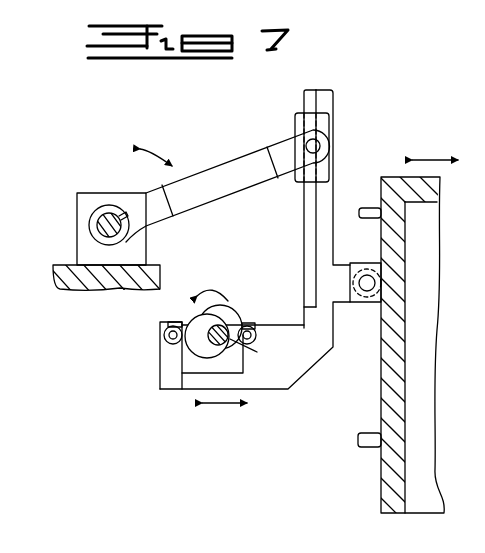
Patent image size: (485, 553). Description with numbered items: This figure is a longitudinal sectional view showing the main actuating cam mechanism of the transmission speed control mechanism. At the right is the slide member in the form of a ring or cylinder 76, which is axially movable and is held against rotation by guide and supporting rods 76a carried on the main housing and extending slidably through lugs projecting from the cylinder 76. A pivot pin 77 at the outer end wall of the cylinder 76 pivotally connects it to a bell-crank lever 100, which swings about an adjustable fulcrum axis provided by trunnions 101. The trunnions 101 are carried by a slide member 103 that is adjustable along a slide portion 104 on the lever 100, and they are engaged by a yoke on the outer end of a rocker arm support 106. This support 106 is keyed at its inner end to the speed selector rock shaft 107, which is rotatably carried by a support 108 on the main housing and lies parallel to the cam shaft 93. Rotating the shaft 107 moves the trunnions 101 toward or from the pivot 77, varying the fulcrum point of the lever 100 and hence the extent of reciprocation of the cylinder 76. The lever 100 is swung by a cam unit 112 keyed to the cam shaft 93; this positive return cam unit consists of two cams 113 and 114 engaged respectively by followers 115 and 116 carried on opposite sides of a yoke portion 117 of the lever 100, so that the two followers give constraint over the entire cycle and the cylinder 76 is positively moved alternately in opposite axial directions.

The cylinder 76 is at (440, 212).
The guide and supporting rods 76a is at (360, 214).
The pivot pin 77 is at (366, 275).
The cam shaft 93 is at (251, 352).
The bell-crank lever 100 is at (316, 351).
The trunnions 101 is at (321, 146).
The slide member 103 is at (326, 123).
The slide portion 104 is at (305, 216).
The rocker arm support 106 is at (208, 170).
The speed selector rock shaft 107 is at (103, 212).
The support 108 is at (161, 270).
The cam unit 112 is at (192, 313).
The cam 113 is at (190, 343).
The cam 114 is at (226, 311).
The follower 115 is at (164, 335).
The follower 116 is at (253, 326).
The yoke portion 117 is at (188, 385).